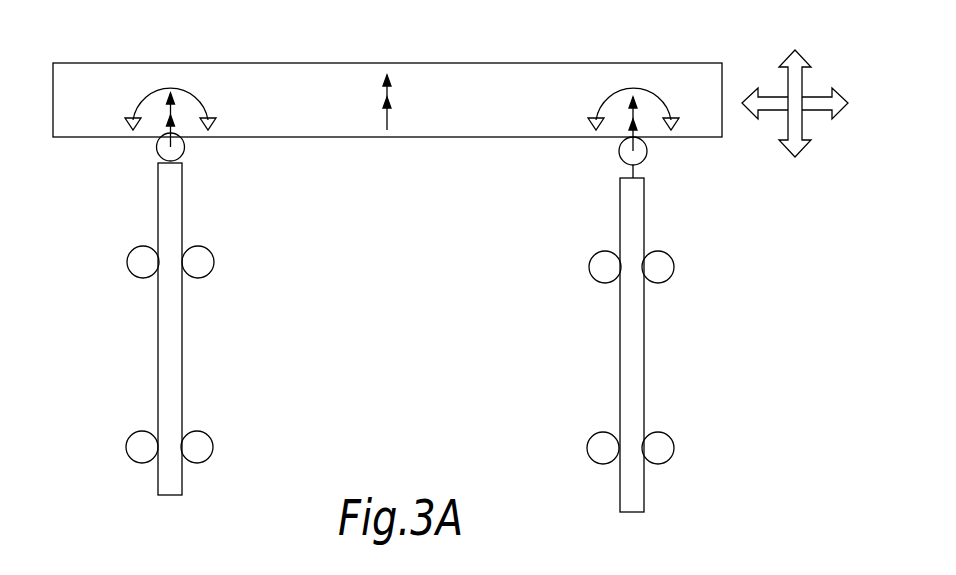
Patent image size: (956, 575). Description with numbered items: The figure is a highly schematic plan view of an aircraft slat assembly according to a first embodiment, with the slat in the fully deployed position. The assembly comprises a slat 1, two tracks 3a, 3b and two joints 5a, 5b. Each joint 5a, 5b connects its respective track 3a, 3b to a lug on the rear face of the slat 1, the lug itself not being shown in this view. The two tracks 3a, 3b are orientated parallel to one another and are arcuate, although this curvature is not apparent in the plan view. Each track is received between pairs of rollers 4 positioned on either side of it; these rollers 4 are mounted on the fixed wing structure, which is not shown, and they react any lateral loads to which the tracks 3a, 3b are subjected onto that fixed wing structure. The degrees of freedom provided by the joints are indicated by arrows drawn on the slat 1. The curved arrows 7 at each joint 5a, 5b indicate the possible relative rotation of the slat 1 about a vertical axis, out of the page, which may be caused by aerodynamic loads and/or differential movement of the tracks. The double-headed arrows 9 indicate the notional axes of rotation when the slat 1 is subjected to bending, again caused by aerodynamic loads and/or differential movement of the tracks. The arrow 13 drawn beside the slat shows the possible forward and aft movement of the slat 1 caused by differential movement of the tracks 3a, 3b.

The slat 1 is at (240, 82).
The track 3a is at (157, 355).
The track 3b is at (645, 363).
The rollers 4 is at (213, 268).
The joint 5a is at (158, 155).
The joint 5b is at (619, 153).
The arrows 7 is at (150, 85).
The double-headed arrows 9 is at (183, 133).
The arrow 13 is at (793, 53).